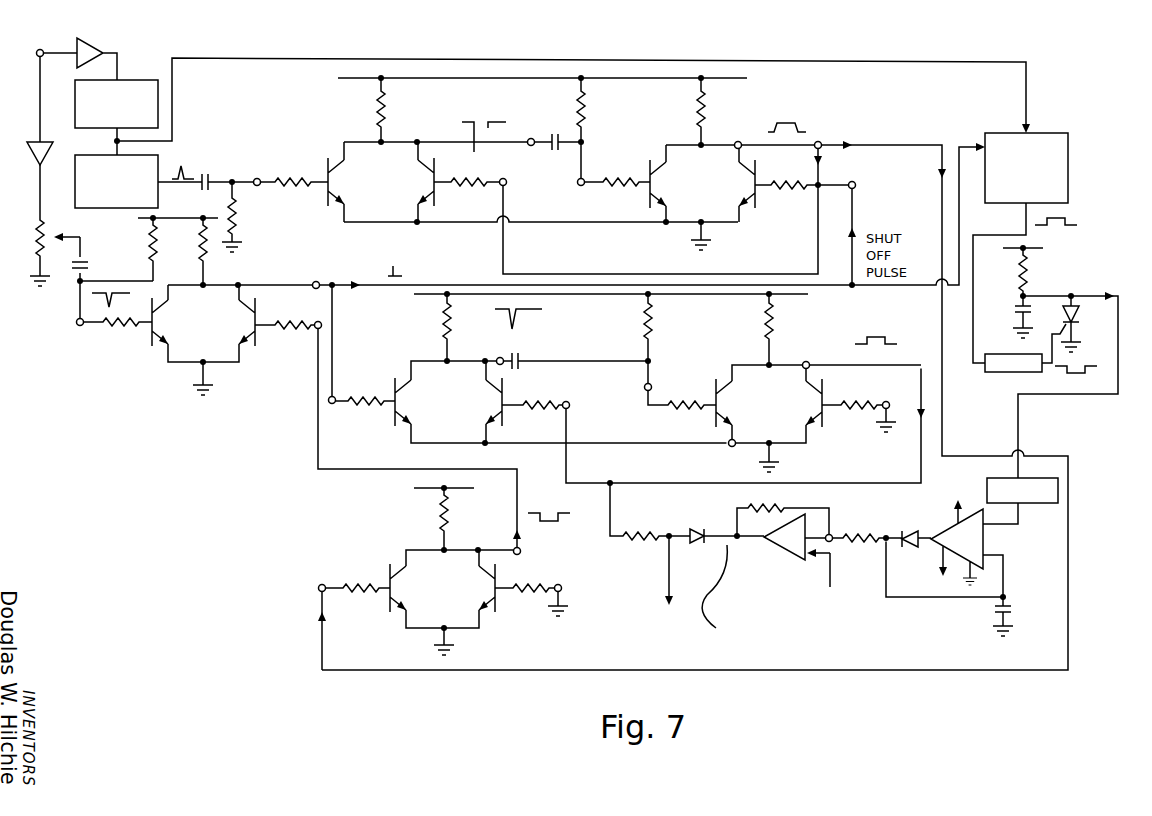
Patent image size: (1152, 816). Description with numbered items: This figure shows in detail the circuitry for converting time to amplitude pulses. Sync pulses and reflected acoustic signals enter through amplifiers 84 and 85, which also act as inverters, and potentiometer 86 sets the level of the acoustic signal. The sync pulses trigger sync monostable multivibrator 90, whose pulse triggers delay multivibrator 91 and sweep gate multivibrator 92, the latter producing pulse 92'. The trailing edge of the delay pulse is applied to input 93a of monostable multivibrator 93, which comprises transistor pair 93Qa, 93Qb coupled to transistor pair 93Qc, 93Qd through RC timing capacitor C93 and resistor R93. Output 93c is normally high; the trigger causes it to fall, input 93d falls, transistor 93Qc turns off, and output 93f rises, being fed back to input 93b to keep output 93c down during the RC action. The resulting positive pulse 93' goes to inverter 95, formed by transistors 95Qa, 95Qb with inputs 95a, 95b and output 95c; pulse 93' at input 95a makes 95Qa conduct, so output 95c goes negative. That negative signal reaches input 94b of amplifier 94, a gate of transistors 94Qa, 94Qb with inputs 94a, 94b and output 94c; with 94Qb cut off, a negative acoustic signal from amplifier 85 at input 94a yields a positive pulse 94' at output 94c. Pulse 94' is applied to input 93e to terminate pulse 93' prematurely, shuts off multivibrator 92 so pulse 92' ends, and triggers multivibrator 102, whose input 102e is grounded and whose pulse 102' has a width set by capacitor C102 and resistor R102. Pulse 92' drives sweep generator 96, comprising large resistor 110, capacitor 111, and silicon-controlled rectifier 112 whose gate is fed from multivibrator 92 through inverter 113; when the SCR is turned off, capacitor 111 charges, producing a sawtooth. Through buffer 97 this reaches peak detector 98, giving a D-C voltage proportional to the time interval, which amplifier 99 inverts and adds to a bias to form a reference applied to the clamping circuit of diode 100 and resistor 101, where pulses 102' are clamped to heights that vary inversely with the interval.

The amplifier 84 is at (88, 45).
The amplifier 85 is at (27, 157).
The potentiometer 86 is at (34, 248).
The sync monostable multivibrator 90 is at (143, 76).
The delay multivibrator 91 is at (110, 209).
The sweep gate multivibrator 92 is at (1043, 158).
The sweep gate pulse 92' is at (1075, 212).
The monostable multivibrator 93 is at (576, 162).
The positive pulse 93' is at (775, 115).
The input 93a is at (258, 178).
The input 93b is at (507, 182).
The output 93c is at (500, 130).
The input 93d is at (580, 186).
The input 93e is at (856, 184).
The output 93f is at (815, 149).
The transistor 93Qa is at (349, 182).
The transistor 93Qb is at (411, 182).
The transistor 93Qc is at (671, 184).
The transistor 93Qd is at (732, 184).
The resistor R93 is at (598, 111).
The RC timing capacitor C93 is at (557, 133).
The amplifier 94 is at (226, 338).
The pulse 94' is at (411, 266).
The input terminal 94a is at (78, 327).
The input terminal 94b is at (316, 329).
The output terminal 94c is at (314, 289).
The transistor 94Qa is at (173, 322).
The transistor 94Qb is at (233, 322).
The inverter 95 is at (368, 537).
The input 95a is at (320, 583).
The input 95b is at (562, 586).
The output terminal 95c is at (521, 551).
The transistor 95Qa is at (410, 588).
The transistor 95Qb is at (472, 588).
The sweep generator 96 is at (1097, 271).
The buffer 97 is at (1042, 504).
The peak detector 98 is at (954, 608).
The amplifier 99 is at (778, 558).
The diode 100 is at (696, 528).
The resistor 101 is at (645, 540).
The multivibrator 102 is at (645, 381).
The pulse 102' is at (881, 329).
The input 102e is at (887, 402).
The capacitor C102 is at (522, 369).
The resistor R102 is at (680, 351).
The large resistor 110 is at (1018, 271).
The capacitor 111 is at (1014, 313).
The silicon-controlled rectifier 112 is at (1080, 320).
The inverter 113 is at (1012, 374).